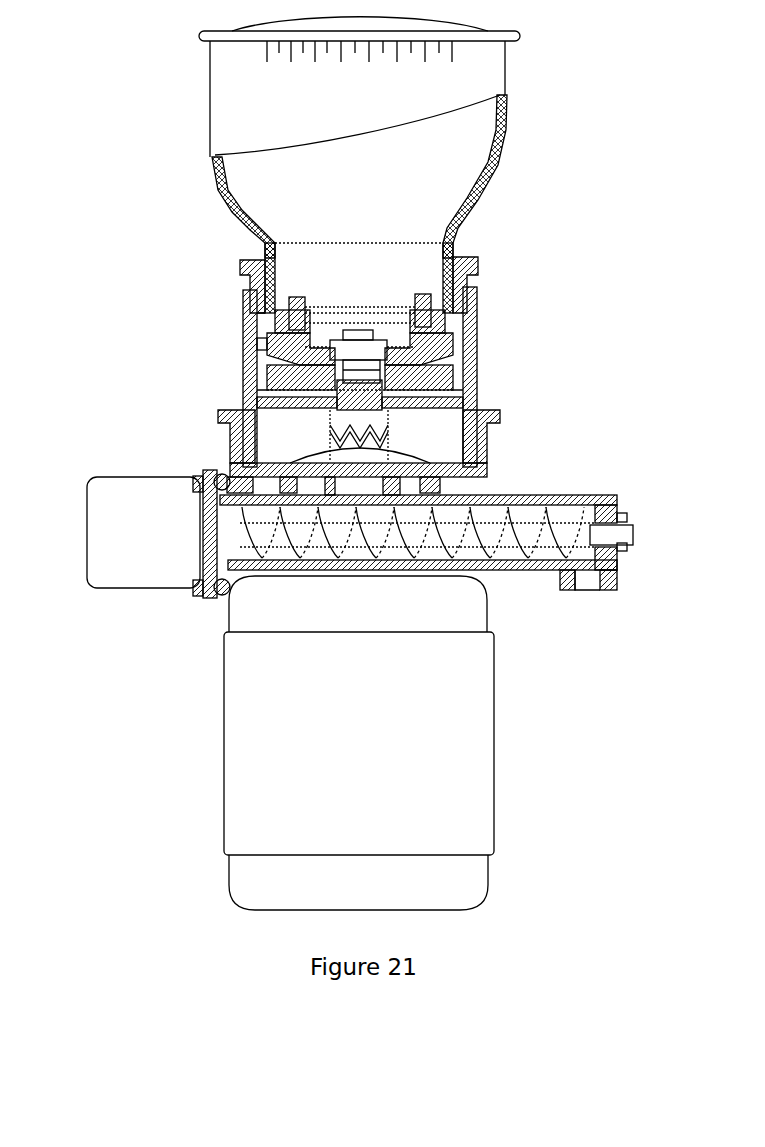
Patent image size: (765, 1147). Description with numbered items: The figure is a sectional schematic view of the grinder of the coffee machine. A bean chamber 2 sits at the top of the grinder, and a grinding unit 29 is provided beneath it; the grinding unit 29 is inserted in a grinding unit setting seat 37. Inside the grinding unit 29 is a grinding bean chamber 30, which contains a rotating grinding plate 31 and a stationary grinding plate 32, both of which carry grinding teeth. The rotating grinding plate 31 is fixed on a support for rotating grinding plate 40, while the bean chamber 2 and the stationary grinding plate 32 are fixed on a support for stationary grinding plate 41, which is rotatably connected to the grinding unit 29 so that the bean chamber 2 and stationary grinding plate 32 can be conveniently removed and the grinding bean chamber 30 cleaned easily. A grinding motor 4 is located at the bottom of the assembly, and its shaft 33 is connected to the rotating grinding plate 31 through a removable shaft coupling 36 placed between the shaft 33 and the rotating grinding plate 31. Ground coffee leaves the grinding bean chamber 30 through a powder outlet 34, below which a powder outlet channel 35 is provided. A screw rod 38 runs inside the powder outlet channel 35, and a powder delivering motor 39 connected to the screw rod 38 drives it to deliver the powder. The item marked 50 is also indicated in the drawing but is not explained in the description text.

The bean chamber 2 is at (500, 175).
The support for stationary grinding plate 41 is at (478, 256).
The support for rotating grinding plate 40 is at (247, 357).
The stationary grinding plate 32 is at (468, 298).
The grinding bean chamber 30 is at (455, 330).
The rotating grinding plate 31 is at (447, 358).
The grinding unit 29 is at (430, 385).
The removable shaft coupling 36 is at (383, 413).
The powder outlet 34 is at (370, 452).
The grinding unit setting seat 37 is at (490, 443).
The powder outlet channel 35 is at (440, 510).
The screw rod 38 is at (465, 522).
The powder delivering motor 39 is at (190, 497).
The shaft of grinding motor 33 is at (370, 570).
The grinding motor 4 is at (453, 735).
The sensor 50 is at (262, 344).